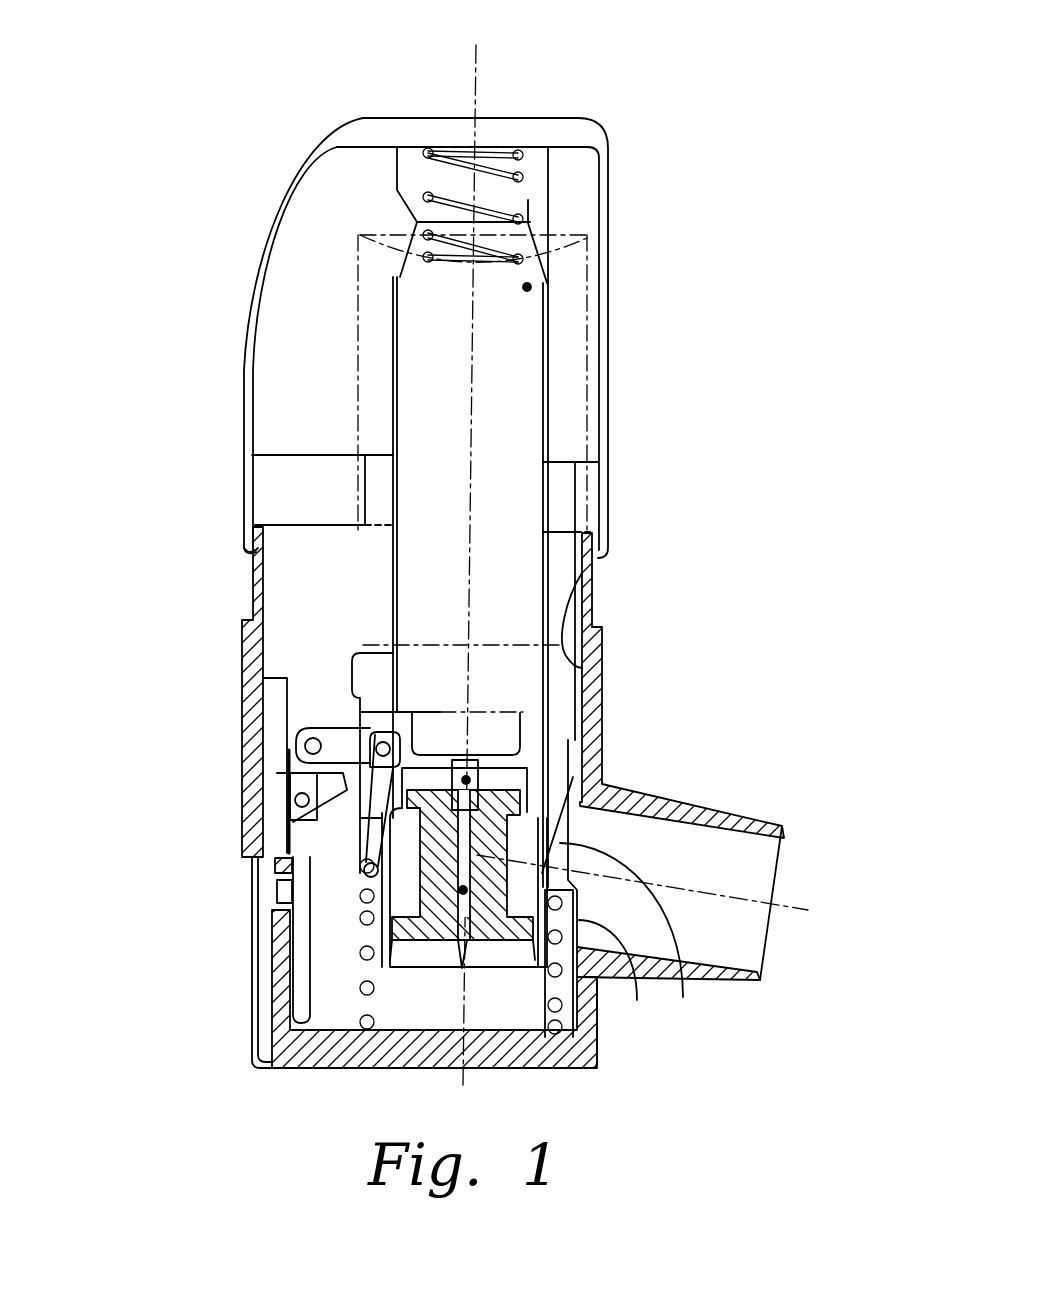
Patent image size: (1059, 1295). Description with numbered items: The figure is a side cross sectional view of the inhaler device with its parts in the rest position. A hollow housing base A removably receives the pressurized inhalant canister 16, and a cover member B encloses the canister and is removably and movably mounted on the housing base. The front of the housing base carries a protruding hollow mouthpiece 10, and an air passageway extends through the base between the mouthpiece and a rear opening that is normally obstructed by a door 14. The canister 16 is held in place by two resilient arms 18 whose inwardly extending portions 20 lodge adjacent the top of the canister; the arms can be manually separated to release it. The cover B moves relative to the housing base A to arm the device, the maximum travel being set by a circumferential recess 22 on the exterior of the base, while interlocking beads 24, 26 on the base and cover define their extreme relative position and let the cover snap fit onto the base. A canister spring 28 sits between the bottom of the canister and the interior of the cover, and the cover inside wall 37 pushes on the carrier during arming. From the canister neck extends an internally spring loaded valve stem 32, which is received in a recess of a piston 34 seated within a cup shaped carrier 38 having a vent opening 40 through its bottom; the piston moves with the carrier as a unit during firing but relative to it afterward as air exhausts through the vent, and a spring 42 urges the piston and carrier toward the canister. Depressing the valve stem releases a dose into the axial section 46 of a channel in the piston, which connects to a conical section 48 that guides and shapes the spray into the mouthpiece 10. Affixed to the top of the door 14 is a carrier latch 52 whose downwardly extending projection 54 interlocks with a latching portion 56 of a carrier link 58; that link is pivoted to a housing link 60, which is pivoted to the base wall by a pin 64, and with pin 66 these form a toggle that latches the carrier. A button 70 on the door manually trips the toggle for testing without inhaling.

The mouthpiece 10 is at (720, 806).
The door 14 is at (330, 993).
The canister 16 is at (588, 238).
The resilient arms 18 is at (527, 287).
The inwardly extending portions 20 is at (417, 222).
The circumferential recess 22 is at (252, 612).
The bead 24 is at (272, 470).
The bead 26 is at (247, 548).
The canister spring 28 is at (520, 152).
The valve stem 32 is at (466, 780).
The piston 34 is at (478, 767).
The cover inside wall 37 is at (600, 420).
The carrier 38 is at (606, 978).
The vent opening 40 is at (475, 960).
The spring 42 is at (364, 953).
The axial section 46 is at (462, 890).
The conical section 48 is at (602, 935).
The carrier latch 52 is at (343, 787).
The projection 54 is at (360, 828).
The latching portion 56 is at (392, 732).
The carrier link 58 is at (362, 858).
The housing link 60 is at (300, 742).
The pin 64 is at (318, 735).
The pin 66 is at (277, 867).
The button 70 is at (277, 893).
The housing base A is at (607, 637).
The cover member B is at (363, 116).